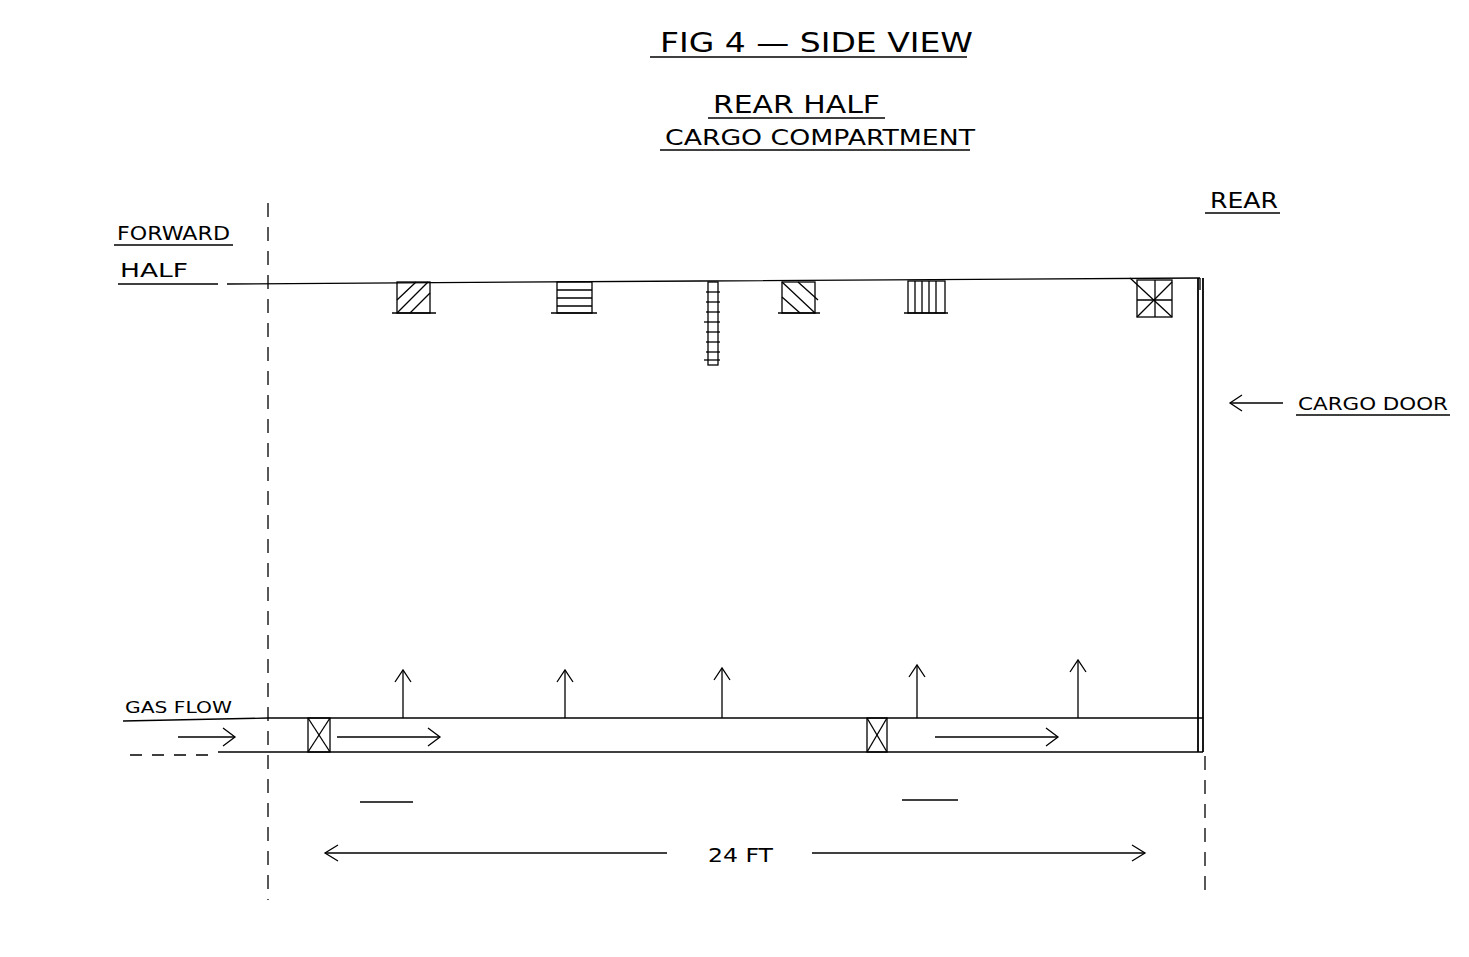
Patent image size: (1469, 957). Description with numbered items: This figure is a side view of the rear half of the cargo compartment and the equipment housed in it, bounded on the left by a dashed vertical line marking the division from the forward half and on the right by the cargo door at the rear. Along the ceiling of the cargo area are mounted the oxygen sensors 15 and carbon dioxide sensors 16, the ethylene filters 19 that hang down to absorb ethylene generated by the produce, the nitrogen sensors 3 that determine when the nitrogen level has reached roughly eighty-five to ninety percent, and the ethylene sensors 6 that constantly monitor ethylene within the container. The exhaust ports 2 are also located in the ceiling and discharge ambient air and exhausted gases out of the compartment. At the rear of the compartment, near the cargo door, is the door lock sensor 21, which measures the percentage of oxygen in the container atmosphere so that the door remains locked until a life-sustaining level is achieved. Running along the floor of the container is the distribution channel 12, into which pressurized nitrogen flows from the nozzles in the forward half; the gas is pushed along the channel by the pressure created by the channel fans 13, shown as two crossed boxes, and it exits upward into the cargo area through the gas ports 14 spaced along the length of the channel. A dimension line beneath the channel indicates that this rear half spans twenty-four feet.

The exhaust port 2 is at (1003, 279).
The nitrogen sensor 3 is at (799, 278).
The ethylene sensor 6 is at (926, 274).
The distribution channel 12 is at (663, 736).
The channel fan 13 is at (629, 760).
The gas port 14 is at (740, 674).
The oxygen sensor 15 is at (414, 277).
The carbon dioxide sensor 16 is at (574, 277).
The ethylene filter 19 is at (713, 305).
The door lock sensor 21 is at (1151, 277).